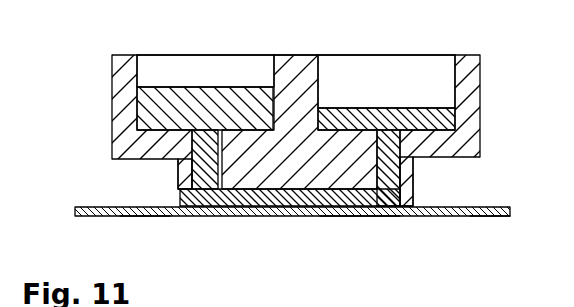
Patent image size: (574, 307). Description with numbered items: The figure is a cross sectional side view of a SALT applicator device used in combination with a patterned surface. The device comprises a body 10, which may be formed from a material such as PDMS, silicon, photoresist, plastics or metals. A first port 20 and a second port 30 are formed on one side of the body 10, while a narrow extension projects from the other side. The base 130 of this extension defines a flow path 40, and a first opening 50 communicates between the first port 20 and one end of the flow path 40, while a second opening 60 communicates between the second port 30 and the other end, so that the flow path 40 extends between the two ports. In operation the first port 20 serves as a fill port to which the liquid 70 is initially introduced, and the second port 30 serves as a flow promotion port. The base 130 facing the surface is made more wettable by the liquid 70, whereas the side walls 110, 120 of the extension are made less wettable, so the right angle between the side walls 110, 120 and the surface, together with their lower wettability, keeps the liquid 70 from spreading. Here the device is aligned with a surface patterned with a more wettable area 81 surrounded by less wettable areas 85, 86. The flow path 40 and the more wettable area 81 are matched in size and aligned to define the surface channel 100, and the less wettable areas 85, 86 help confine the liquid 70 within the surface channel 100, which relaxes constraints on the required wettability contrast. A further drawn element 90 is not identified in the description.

The body 10 is at (305, 62).
The first port 20 is at (207, 62).
The second port 30 is at (403, 62).
The flow path 40 is at (377, 217).
The first opening 50 is at (118, 149).
The second opening 60 is at (383, 137).
The liquid 70 is at (143, 101).
The more wettable area 81 is at (146, 218).
The less wettable area 85 is at (75, 212).
The less wettable area 86 is at (498, 211).
The left support member 90 is at (222, 208).
The surface channel 100 is at (302, 208).
The side wall 110 is at (172, 188).
The side wall 120 is at (418, 172).
The base 130 is at (337, 217).